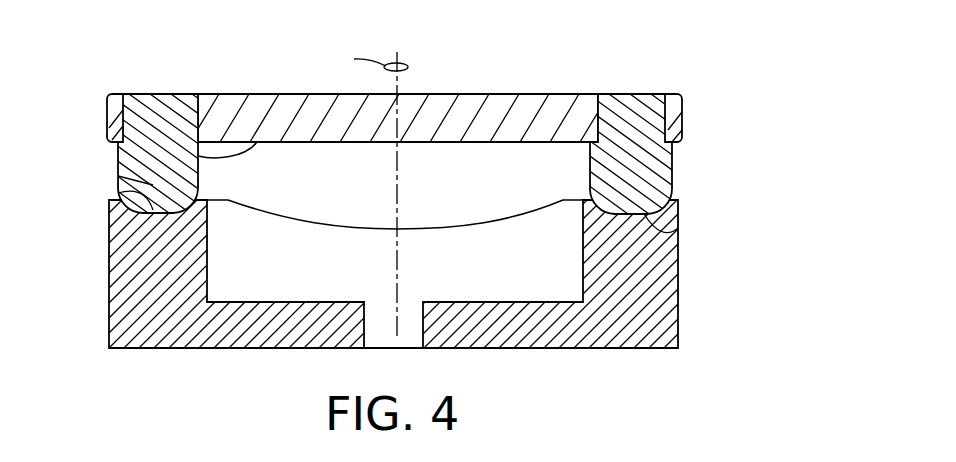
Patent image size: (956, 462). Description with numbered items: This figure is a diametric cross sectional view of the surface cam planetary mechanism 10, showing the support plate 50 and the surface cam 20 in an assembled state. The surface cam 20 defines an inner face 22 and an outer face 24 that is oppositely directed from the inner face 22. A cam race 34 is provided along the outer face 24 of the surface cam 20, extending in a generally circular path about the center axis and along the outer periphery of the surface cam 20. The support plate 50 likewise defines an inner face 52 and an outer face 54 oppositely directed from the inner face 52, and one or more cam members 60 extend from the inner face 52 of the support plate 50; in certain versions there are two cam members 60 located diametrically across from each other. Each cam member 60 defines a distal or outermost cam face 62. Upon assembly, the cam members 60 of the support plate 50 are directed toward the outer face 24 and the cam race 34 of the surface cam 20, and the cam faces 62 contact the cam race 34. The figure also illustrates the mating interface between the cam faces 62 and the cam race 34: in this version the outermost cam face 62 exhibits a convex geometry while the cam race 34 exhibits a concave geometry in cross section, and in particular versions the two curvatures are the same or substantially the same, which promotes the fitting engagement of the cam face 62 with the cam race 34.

The surface cam planetary mechanism 10 is at (740, 97).
The surface cam 20 is at (665, 303).
The inner face 22 is at (600, 348).
The outer face 24 is at (458, 227).
The cam race 34 is at (680, 227).
The support plate 50 is at (643, 177).
The inner face 52 is at (118, 152).
The outer face 54 is at (247, 93).
The cam member 60 is at (112, 177).
The cam face 62 is at (118, 193).